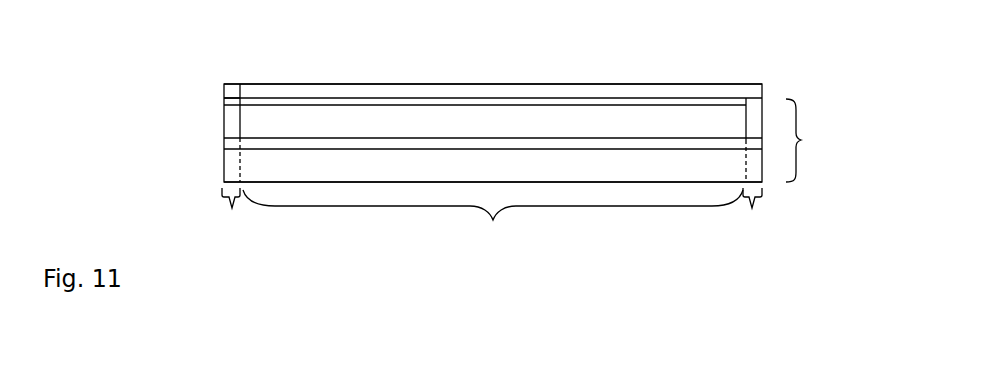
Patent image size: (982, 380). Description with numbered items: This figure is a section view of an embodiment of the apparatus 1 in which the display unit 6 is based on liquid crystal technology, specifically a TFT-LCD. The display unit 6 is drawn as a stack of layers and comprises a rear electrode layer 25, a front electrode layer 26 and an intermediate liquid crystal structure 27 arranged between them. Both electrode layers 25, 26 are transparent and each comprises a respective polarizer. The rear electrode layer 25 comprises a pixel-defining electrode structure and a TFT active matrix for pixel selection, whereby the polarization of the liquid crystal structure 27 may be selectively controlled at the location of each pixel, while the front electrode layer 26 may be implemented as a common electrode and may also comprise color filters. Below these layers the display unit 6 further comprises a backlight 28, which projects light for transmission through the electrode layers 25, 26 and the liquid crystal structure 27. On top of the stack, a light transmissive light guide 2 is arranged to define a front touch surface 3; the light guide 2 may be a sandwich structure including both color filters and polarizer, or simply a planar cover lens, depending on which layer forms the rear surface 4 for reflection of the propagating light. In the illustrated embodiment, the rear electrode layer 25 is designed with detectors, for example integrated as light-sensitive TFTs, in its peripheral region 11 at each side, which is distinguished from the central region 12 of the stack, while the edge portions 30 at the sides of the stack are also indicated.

The laminated assembly 1 is at (749, 58).
The light guide 2 is at (633, 90).
The front touch surface 3 is at (427, 84).
The rear surface 4 is at (360, 95).
The display unit 6 is at (806, 140).
The peripheral region 11 is at (493, 188).
The central region 12 is at (493, 219).
The rear electrode layer 25 is at (257, 143).
The front electrode layer 26 is at (255, 102).
The liquid crystal structure 27 is at (257, 123).
The backlight 28 is at (257, 168).
The edge seal 30 is at (236, 108).